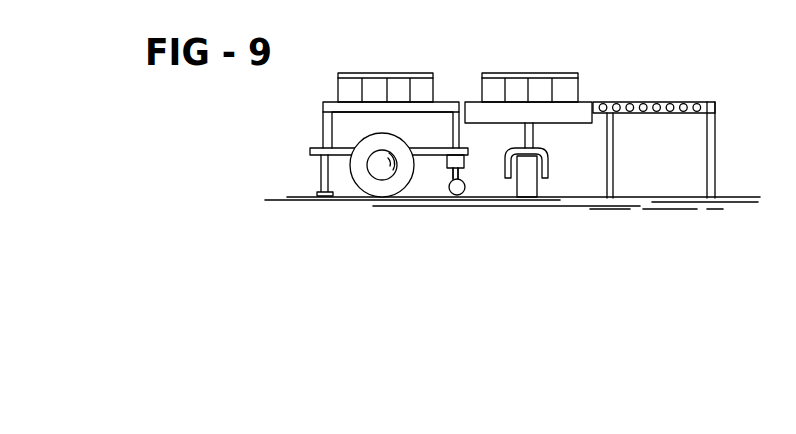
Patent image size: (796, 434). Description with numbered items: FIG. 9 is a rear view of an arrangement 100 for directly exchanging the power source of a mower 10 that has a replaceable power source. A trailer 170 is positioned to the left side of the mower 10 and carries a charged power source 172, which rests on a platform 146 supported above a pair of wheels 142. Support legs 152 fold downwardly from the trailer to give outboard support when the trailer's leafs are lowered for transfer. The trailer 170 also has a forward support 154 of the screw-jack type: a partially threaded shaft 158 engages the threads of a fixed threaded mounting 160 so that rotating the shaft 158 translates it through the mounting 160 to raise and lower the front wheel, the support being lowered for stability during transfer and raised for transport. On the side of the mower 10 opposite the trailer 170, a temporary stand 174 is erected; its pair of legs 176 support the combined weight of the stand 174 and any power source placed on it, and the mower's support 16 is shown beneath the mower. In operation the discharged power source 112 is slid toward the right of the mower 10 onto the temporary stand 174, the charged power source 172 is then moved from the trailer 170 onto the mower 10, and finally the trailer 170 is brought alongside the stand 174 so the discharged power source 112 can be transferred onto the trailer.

The system 100 is at (308, 3).
The trailer 170 is at (293, 142).
The platform 146 is at (438, 101).
The charged power source 172 is at (398, 75).
The support legs 152 is at (320, 183).
The wheels 142 is at (357, 182).
The threaded mounting 160 is at (466, 166).
The partially threaded shaft 158 is at (450, 190).
The forward support 154 is at (466, 177).
The discharged power source 112 is at (540, 82).
The mower 10 is at (557, 118).
The fork support 16 is at (528, 190).
The temporary stand 174 is at (657, 102).
The legs 176 is at (617, 182).